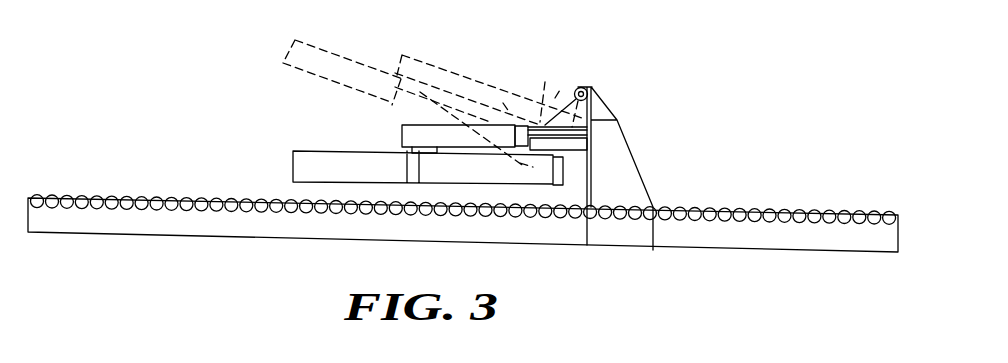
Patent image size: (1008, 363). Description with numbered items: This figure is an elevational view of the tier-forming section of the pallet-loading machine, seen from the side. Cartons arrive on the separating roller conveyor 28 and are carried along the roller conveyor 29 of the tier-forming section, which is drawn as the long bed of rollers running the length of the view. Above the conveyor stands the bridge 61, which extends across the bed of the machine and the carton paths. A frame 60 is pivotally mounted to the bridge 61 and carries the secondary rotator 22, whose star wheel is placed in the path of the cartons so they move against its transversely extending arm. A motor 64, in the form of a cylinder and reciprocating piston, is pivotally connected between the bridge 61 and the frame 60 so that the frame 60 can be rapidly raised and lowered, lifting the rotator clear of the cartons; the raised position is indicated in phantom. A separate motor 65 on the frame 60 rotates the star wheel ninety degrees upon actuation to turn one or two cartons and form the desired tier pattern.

The secondary rotator 22 is at (341, 90).
The roller conveyor 28 is at (714, 209).
The roller conveyor 29 is at (158, 197).
The frame 60 is at (463, 125).
The bridge 61 is at (617, 121).
The motor 64 is at (532, 127).
The motor 65 is at (410, 150).